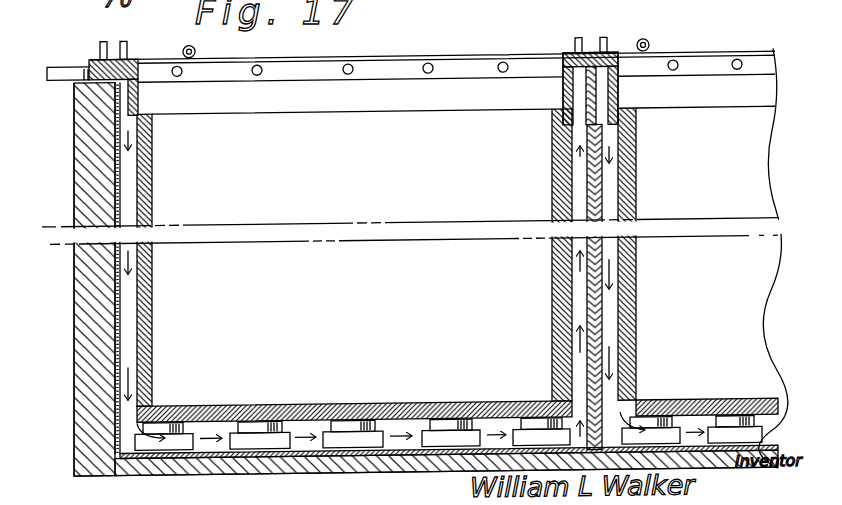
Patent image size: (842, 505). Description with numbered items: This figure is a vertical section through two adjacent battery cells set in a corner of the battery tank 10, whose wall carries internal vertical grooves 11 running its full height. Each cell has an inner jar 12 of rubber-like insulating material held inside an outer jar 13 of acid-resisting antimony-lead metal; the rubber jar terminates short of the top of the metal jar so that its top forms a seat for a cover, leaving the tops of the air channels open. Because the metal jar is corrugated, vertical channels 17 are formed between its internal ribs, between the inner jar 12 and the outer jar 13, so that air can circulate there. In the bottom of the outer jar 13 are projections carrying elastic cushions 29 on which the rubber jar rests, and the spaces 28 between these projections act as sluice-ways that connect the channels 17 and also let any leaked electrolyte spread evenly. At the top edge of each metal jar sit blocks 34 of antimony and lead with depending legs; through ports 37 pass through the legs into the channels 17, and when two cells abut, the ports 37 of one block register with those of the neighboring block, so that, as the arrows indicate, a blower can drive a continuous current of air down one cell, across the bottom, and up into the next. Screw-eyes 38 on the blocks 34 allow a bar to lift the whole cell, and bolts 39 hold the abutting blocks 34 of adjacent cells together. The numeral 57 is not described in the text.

The battery tank 10 is at (75, 347).
The internal vertical grooves 11 is at (70, 292).
The inner jar 12 is at (463, 144).
The outer jar 13 is at (403, 459).
The channels 17 is at (128, 295).
The spaces 28 is at (210, 450).
The cushions 29 is at (318, 393).
The blocks 34 is at (282, 60).
The through ports 37 is at (134, 92).
The screw-eyes 38 is at (124, 43).
The bolts 39 is at (426, 68).
The partition wall 57 is at (547, 118).